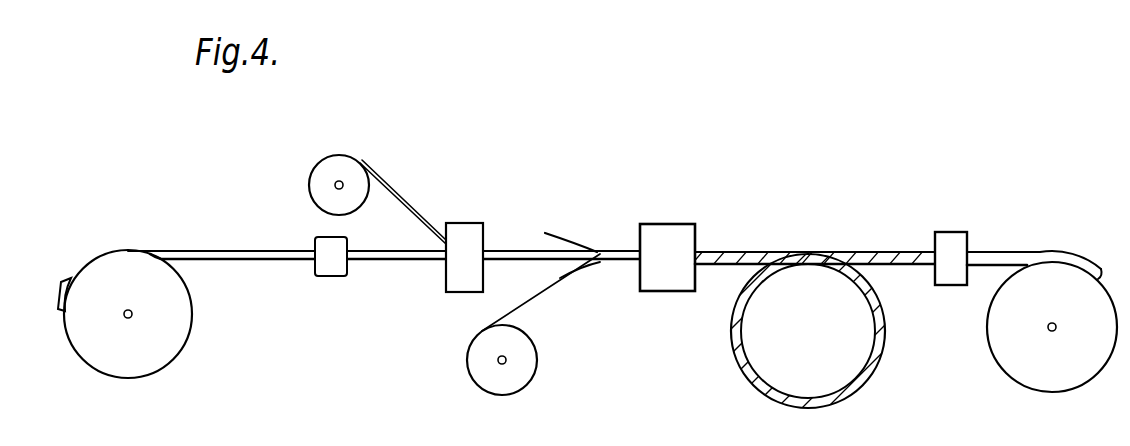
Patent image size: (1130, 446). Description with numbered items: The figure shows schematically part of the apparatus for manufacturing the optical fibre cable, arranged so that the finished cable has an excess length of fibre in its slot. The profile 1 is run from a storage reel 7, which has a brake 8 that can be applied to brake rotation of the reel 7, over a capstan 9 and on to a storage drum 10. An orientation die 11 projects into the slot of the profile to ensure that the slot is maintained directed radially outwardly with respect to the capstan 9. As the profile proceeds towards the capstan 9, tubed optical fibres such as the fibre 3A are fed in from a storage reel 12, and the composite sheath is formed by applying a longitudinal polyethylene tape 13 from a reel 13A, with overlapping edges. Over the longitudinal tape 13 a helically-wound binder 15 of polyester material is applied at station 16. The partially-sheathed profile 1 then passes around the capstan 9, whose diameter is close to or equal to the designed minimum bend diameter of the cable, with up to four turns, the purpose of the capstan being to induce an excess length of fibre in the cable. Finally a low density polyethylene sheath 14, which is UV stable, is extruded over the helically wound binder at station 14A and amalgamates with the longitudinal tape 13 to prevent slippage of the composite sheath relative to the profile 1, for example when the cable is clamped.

The profile 1 is at (196, 250).
The tubed optical fibre 3A is at (397, 196).
The storage reel 7 is at (167, 352).
The brake 8 is at (66, 279).
The capstan 9 is at (760, 359).
The storage drum 10 is at (1003, 352).
The orientation die 11 is at (316, 250).
The storage reel 12 is at (318, 166).
The longitudinal polyethylene tape 13 is at (612, 260).
The reel 13A is at (470, 373).
The low density polyethylene sheath 14 is at (1053, 258).
The station 14A is at (952, 238).
The helically-wound binder 15 is at (716, 252).
The station 16 is at (667, 285).